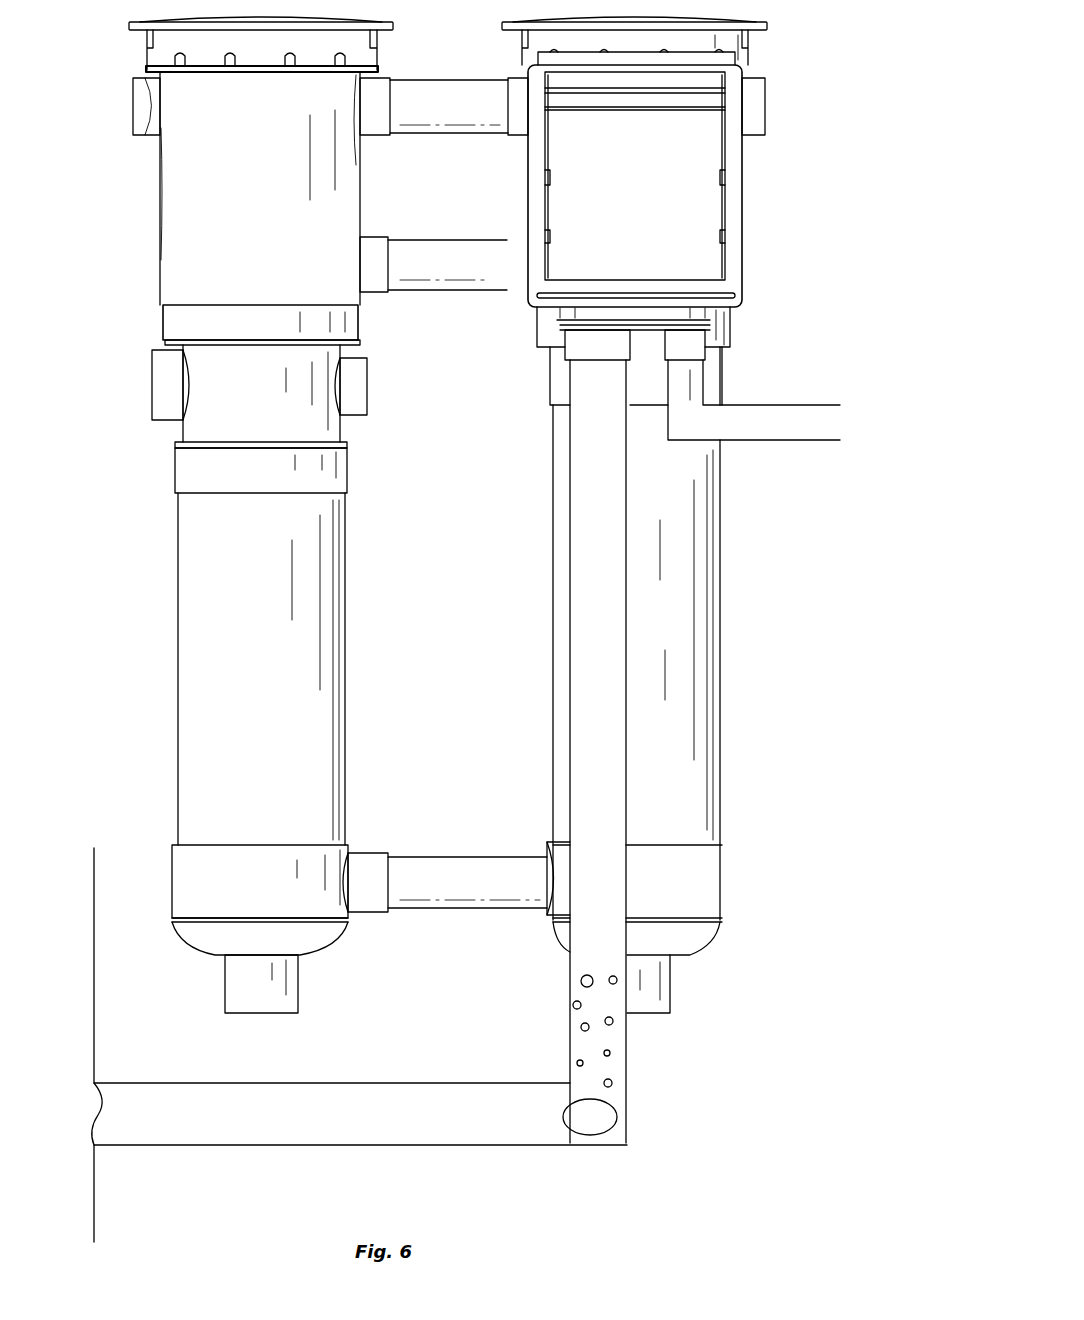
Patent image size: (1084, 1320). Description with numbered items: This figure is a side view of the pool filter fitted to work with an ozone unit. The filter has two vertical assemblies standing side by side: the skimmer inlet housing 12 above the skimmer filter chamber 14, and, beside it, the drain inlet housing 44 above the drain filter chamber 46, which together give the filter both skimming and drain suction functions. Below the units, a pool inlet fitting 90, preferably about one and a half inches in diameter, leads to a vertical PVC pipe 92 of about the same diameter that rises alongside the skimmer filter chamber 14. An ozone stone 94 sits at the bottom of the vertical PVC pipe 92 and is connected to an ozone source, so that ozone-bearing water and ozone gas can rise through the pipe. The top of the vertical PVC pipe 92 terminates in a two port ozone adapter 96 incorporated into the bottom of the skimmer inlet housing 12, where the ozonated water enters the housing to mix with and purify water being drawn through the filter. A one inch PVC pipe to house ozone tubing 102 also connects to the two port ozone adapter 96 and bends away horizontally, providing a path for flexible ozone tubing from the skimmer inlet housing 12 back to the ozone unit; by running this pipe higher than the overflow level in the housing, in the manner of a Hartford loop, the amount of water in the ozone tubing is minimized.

The skimmer inlet housing 12 is at (743, 208).
The skimmer filter chamber 14 is at (720, 750).
The drain inlet housing 44 is at (160, 208).
The drain filter chamber 46 is at (178, 633).
The pool inlet fitting 90 is at (125, 1117).
The vertical PVC pipe 92 is at (600, 657).
The ozone stone 94 is at (595, 1117).
The two port ozone adapter 96 is at (572, 313).
The one inch PVC pipe to house ozone tubing 102 is at (790, 440).